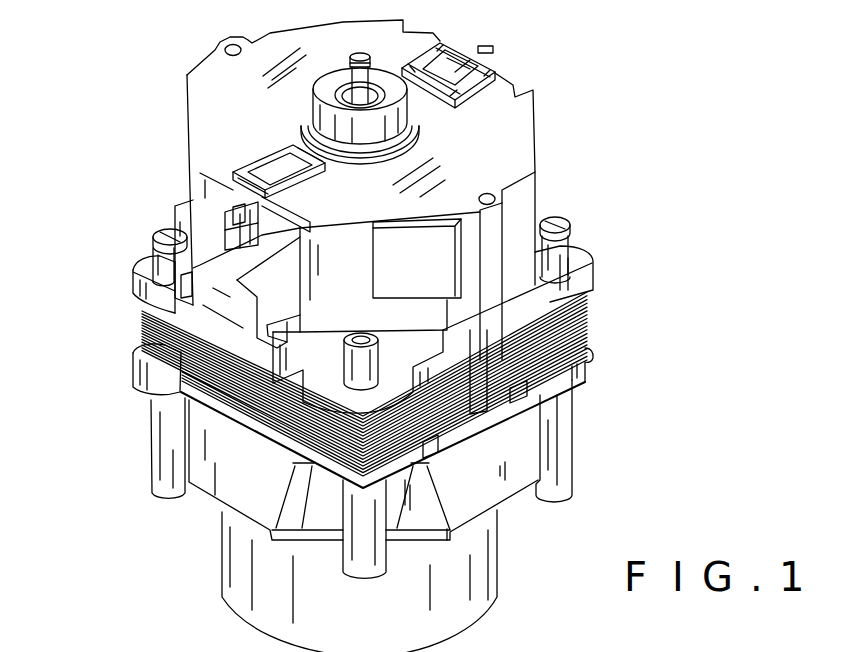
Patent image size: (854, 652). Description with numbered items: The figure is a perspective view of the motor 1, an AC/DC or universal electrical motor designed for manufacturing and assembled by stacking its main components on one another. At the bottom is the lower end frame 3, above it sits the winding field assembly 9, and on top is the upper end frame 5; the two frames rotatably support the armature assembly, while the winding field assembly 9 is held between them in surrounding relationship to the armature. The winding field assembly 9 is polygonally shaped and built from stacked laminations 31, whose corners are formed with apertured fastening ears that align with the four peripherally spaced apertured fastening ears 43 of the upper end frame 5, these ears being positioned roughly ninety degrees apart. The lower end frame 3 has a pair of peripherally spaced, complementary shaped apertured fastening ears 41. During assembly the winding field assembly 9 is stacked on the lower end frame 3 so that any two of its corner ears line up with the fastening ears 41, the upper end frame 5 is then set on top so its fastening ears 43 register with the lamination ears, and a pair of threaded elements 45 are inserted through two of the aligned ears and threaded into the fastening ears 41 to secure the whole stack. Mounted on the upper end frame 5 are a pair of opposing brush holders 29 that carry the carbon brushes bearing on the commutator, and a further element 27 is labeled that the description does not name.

The motor 1 is at (690, 182).
The lower end frame 3 is at (205, 463).
The upper end frame 5 is at (212, 102).
The winding field assembly 9 is at (142, 334).
The terminal 27 is at (232, 207).
The brush holder 29 is at (253, 187).
The laminations 31 is at (585, 330).
The fastening ear 41 is at (165, 453).
The fastening ear 43 is at (150, 264).
The threaded element 45 is at (163, 223).